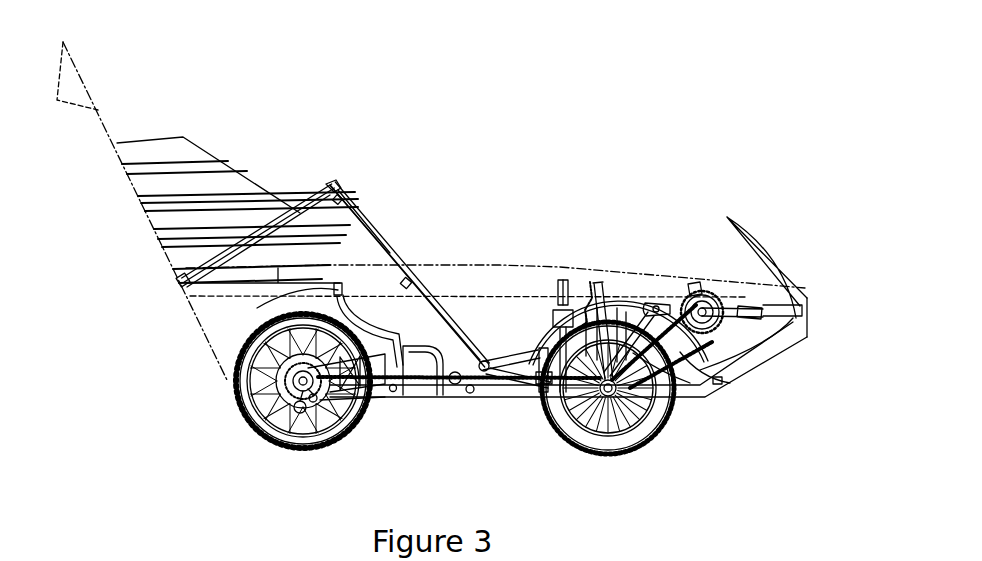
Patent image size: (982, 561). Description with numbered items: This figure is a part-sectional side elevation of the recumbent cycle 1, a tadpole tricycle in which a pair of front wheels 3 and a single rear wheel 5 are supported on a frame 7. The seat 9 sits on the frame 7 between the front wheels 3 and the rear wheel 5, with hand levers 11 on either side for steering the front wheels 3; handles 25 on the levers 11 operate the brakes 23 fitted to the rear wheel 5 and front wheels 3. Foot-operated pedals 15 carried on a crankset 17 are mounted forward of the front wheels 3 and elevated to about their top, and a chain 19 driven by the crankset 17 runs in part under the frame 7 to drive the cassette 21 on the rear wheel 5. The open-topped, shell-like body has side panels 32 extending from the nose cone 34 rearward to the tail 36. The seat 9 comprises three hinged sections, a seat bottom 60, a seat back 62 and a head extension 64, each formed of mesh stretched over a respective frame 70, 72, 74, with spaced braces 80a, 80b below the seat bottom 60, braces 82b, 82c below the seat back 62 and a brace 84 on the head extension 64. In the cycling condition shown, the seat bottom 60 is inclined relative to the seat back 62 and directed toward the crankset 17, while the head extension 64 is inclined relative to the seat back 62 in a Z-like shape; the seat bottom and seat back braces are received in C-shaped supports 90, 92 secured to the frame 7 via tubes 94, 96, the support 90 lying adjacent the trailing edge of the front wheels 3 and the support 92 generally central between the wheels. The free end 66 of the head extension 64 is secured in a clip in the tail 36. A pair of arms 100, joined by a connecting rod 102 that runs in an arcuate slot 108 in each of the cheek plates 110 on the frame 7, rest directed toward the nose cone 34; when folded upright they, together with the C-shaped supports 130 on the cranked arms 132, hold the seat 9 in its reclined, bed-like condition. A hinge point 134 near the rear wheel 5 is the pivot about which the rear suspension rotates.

The recumbent cycle 1 is at (526, 152).
The front wheels 3 is at (638, 448).
The rear wheel 5 is at (273, 443).
The frame 7 is at (437, 385).
The seat 9 is at (395, 160).
The hand levers 11 is at (563, 280).
The foot-operated pedals 15 is at (647, 307).
The crankset 17 is at (703, 293).
The chain 19 is at (660, 338).
The cassette 21 is at (310, 392).
The brakes 23 is at (283, 387).
The handles 25 is at (590, 282).
The side panels 32 is at (500, 272).
The nose cone 34 is at (808, 333).
The tail 36 is at (168, 220).
The seat bottom 60 is at (521, 346).
The seat back 62 is at (385, 250).
The head extension 64 is at (270, 207).
The free end 66 is at (183, 282).
The frame of seat bottom 70 is at (510, 370).
The frame of seat back 72 is at (443, 333).
The frame of head extension 74 is at (298, 207).
The brace 80a is at (543, 375).
The brace 80b is at (497, 370).
The brace 82b is at (411, 287).
The brace 82c is at (338, 204).
The brace 84 is at (336, 190).
The C-shaped support 90 is at (590, 386).
The C-shaped support 92 is at (443, 368).
The tube 94 is at (547, 384).
The tube 96 is at (463, 391).
The arms 100 is at (630, 396).
The connecting rod 102 is at (600, 370).
The arcuate slot 108 is at (629, 378).
The cheek plates 110 is at (630, 357).
The C-shaped supports 130 is at (271, 309).
The cranked arm 132 is at (391, 330).
The hinge point 134 is at (393, 392).